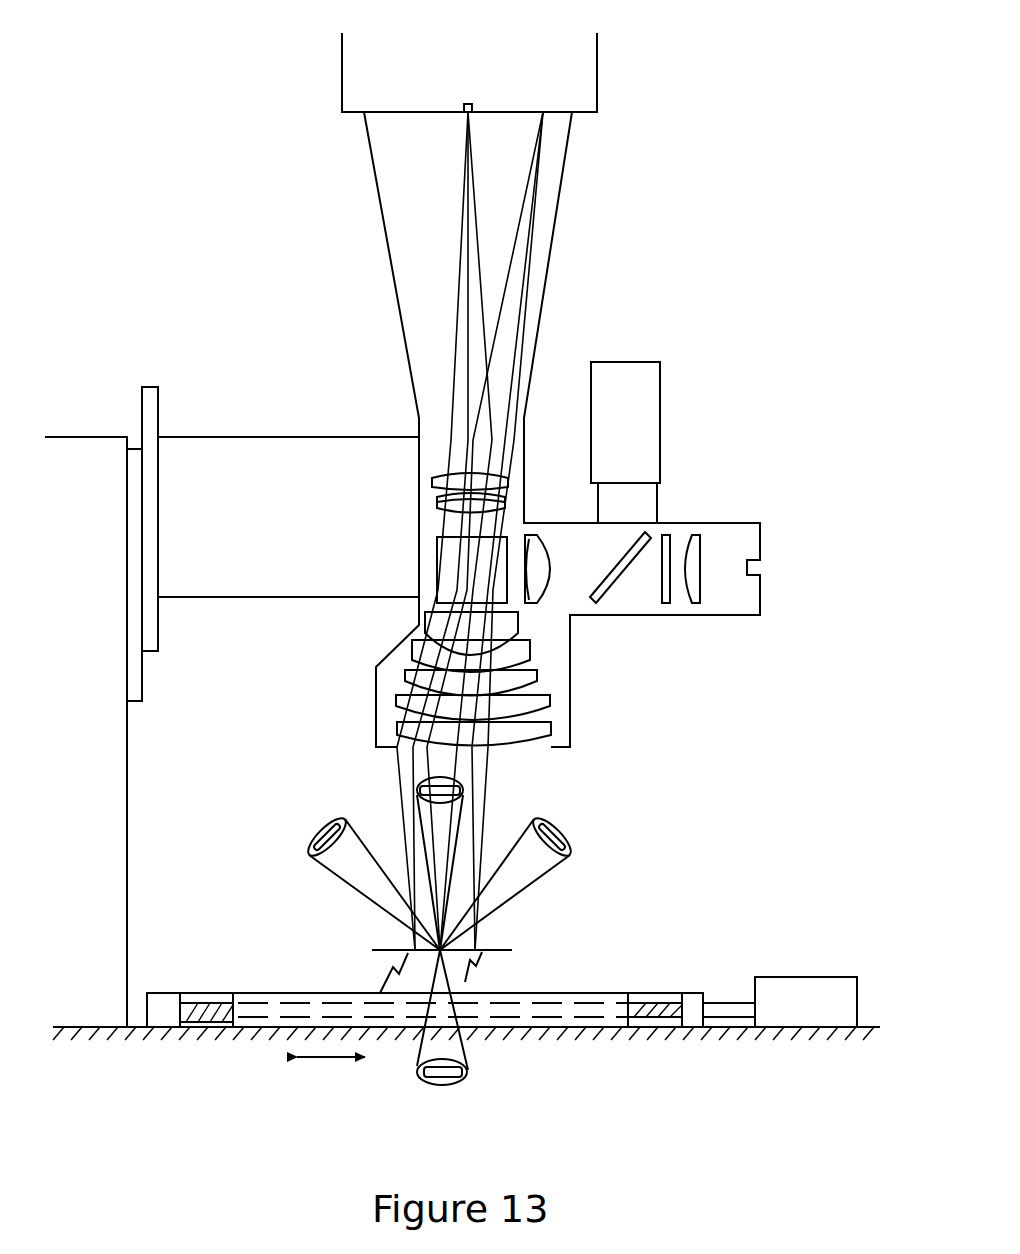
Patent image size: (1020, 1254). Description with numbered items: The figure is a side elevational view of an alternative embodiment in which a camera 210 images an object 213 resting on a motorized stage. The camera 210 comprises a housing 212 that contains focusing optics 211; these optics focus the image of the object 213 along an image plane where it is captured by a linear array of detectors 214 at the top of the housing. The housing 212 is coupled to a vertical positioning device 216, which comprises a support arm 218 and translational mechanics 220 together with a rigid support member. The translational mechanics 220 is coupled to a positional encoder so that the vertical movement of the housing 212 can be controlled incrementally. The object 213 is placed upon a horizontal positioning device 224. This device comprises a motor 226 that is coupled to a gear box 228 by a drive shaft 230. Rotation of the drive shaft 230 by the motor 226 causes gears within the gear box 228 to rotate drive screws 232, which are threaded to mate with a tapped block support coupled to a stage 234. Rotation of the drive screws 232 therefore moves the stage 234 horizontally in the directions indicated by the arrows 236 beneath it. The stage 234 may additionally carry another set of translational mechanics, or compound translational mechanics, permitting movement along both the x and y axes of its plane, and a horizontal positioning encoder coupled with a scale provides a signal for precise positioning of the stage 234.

The camera 210 is at (710, 178).
The focusing optics 211 is at (515, 499).
The housing 212 is at (575, 665).
The object 213 is at (485, 956).
The linear array of detectors 214 is at (470, 103).
The vertical positioning device 216 is at (260, 434).
The support arm 218 is at (313, 449).
The translational mechanics 220 is at (135, 443).
The horizontal positioning device 224 is at (662, 989).
The motor 226 is at (75, 437).
The gear box 228 is at (693, 1017).
The drive shaft 230 is at (727, 1002).
The drive screws 232 is at (652, 1017).
The stage 234 is at (590, 995).
The arrows 236 is at (327, 1060).